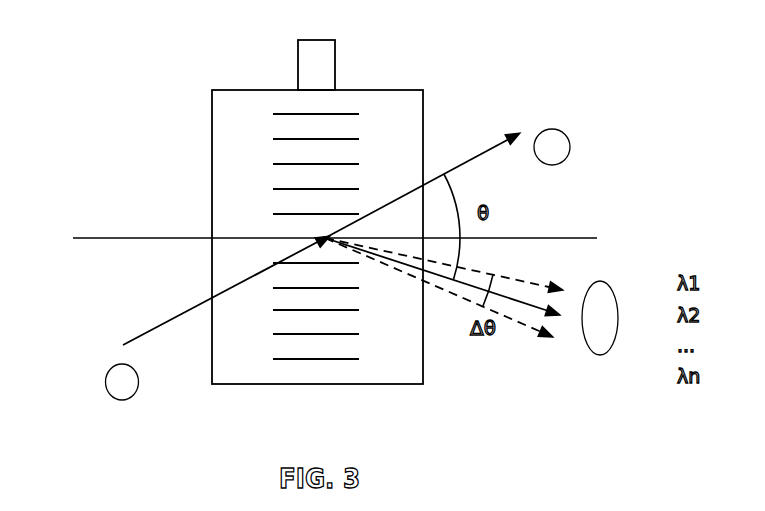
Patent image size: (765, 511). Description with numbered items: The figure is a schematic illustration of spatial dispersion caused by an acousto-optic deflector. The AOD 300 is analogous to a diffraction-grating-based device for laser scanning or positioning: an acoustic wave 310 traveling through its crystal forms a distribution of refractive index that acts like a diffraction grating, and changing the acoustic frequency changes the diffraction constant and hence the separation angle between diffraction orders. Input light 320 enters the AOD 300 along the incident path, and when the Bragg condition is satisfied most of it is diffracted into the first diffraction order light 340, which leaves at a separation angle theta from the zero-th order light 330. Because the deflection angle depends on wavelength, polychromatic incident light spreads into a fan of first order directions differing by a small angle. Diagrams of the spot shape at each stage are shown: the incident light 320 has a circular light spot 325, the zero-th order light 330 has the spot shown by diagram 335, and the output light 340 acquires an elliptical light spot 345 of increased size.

The AOD 300 is at (212, 113).
The acoustic wave 310 is at (360, 107).
The input light 320 is at (136, 337).
The circular light spot 325 is at (100, 390).
The zero-th order light 330 is at (468, 158).
The light spot diagram 335 is at (567, 163).
The first diffraction order light 340 is at (518, 329).
The elliptical light spot 345 is at (619, 285).